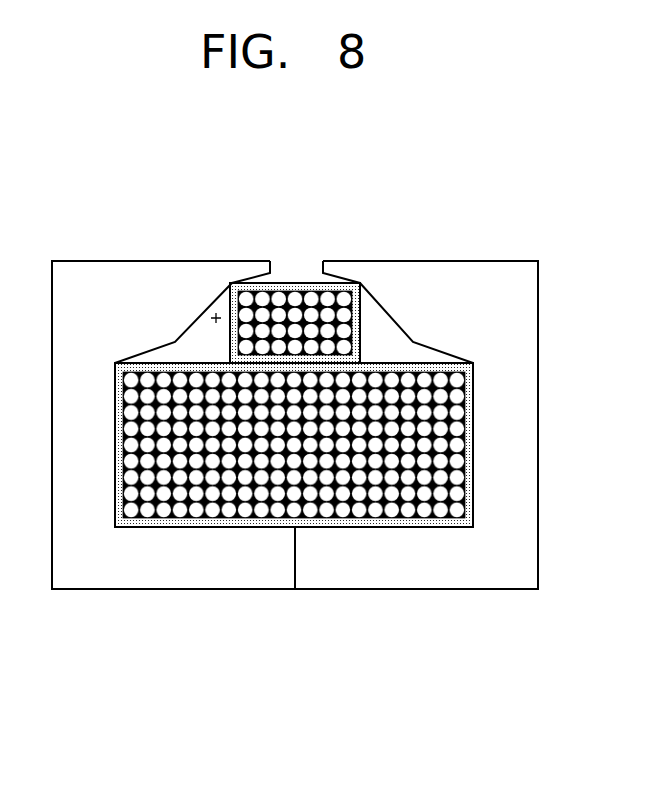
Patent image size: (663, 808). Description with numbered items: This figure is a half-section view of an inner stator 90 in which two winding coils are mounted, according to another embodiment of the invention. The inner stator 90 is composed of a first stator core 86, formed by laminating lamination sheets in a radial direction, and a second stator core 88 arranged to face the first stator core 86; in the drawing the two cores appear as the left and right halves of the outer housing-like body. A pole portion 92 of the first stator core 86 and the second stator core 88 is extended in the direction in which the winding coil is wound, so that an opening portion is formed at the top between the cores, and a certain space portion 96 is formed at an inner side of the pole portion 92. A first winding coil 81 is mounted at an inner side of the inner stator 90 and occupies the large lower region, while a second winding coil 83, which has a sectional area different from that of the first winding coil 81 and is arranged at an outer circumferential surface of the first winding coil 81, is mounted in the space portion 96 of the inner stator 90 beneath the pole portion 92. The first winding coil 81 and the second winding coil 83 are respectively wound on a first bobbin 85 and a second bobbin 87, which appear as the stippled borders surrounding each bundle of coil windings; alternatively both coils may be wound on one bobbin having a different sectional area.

The first winding coil 81 is at (392, 512).
The first bobbin 85 is at (452, 523).
The second winding coil 83 is at (345, 313).
The second bobbin 87 is at (360, 337).
The first stator core 86 is at (249, 580).
The second stator core 88 is at (416, 464).
The inner stator 90 is at (295, 484).
The pole portion 92 is at (337, 268).
The space portion 96 is at (216, 318).